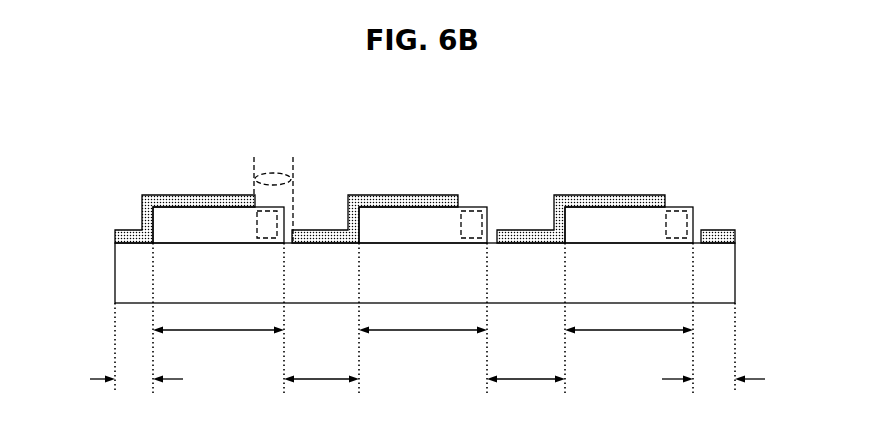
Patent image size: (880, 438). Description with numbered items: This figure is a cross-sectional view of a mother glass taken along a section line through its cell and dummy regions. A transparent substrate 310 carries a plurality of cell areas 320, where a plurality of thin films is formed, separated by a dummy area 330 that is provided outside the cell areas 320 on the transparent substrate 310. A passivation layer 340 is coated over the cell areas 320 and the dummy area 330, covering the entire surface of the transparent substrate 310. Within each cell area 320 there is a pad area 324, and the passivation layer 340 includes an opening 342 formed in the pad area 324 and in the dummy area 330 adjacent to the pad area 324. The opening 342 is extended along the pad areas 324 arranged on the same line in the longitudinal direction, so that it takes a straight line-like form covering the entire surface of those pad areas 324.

The transparent substrate 310 is at (122, 288).
The cell area 320 is at (425, 300).
The pad area 324 is at (271, 222).
The dummy area 330 is at (427, 394).
The passivation layer 340 is at (176, 197).
The opening 342 is at (272, 173).